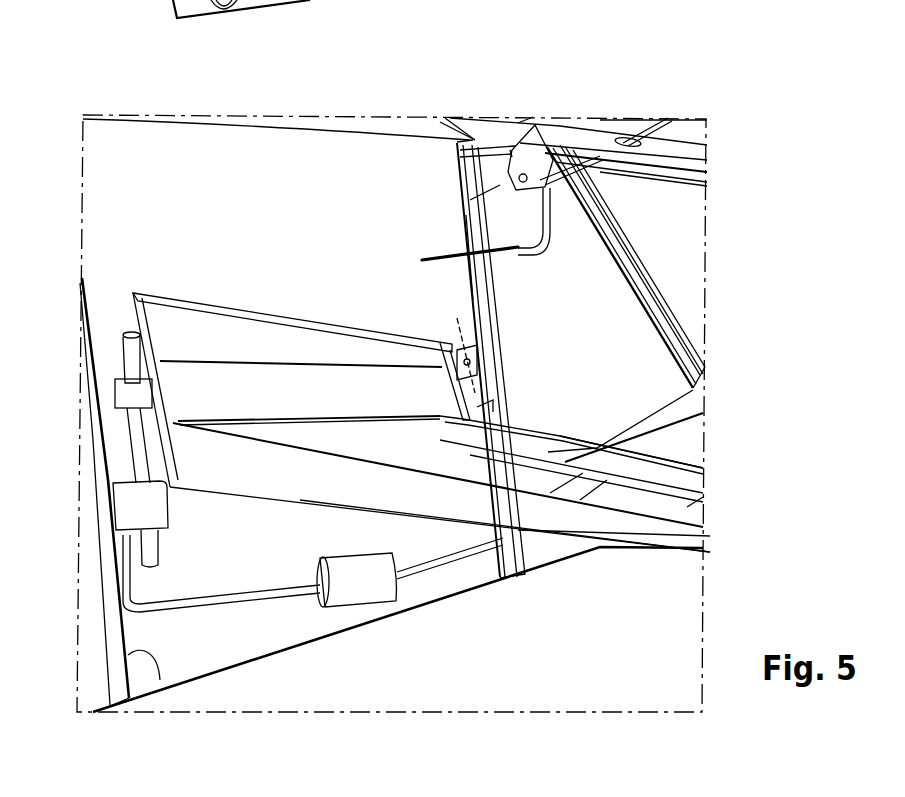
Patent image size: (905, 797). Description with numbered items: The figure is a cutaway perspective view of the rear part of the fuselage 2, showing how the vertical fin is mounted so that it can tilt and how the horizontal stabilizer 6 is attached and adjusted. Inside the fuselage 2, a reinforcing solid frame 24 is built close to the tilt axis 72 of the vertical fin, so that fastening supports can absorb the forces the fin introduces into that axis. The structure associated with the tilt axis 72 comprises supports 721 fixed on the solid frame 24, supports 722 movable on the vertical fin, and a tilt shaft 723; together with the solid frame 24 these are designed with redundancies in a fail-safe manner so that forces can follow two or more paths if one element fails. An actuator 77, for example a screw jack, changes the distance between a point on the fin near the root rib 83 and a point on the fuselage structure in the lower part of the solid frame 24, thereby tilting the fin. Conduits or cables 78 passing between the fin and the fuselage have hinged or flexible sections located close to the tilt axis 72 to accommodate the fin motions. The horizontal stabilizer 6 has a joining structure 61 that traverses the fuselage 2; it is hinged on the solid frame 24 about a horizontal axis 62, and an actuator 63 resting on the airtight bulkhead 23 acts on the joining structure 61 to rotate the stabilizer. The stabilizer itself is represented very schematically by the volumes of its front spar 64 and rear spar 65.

The fuselage 2 is at (316, 658).
The horizontal stabilizer 6 is at (603, 586).
The airtight bulkhead 23 is at (160, 662).
The solid frame 24 is at (500, 558).
The joining structure 61 is at (186, 276).
The horizontal axis 62 is at (458, 332).
The actuator 63 is at (137, 447).
The front spar 64 is at (647, 532).
The rear spar 65 is at (680, 480).
The tilt axis 72 is at (492, 118).
The supports fixed on the solid frame 721 is at (490, 163).
The supports movable on the vertical fin 722 is at (548, 170).
The tilt shaft 723 is at (524, 172).
The actuator 77 is at (690, 412).
The conduits or cables 78 is at (541, 241).
The root rib 83 is at (657, 313).